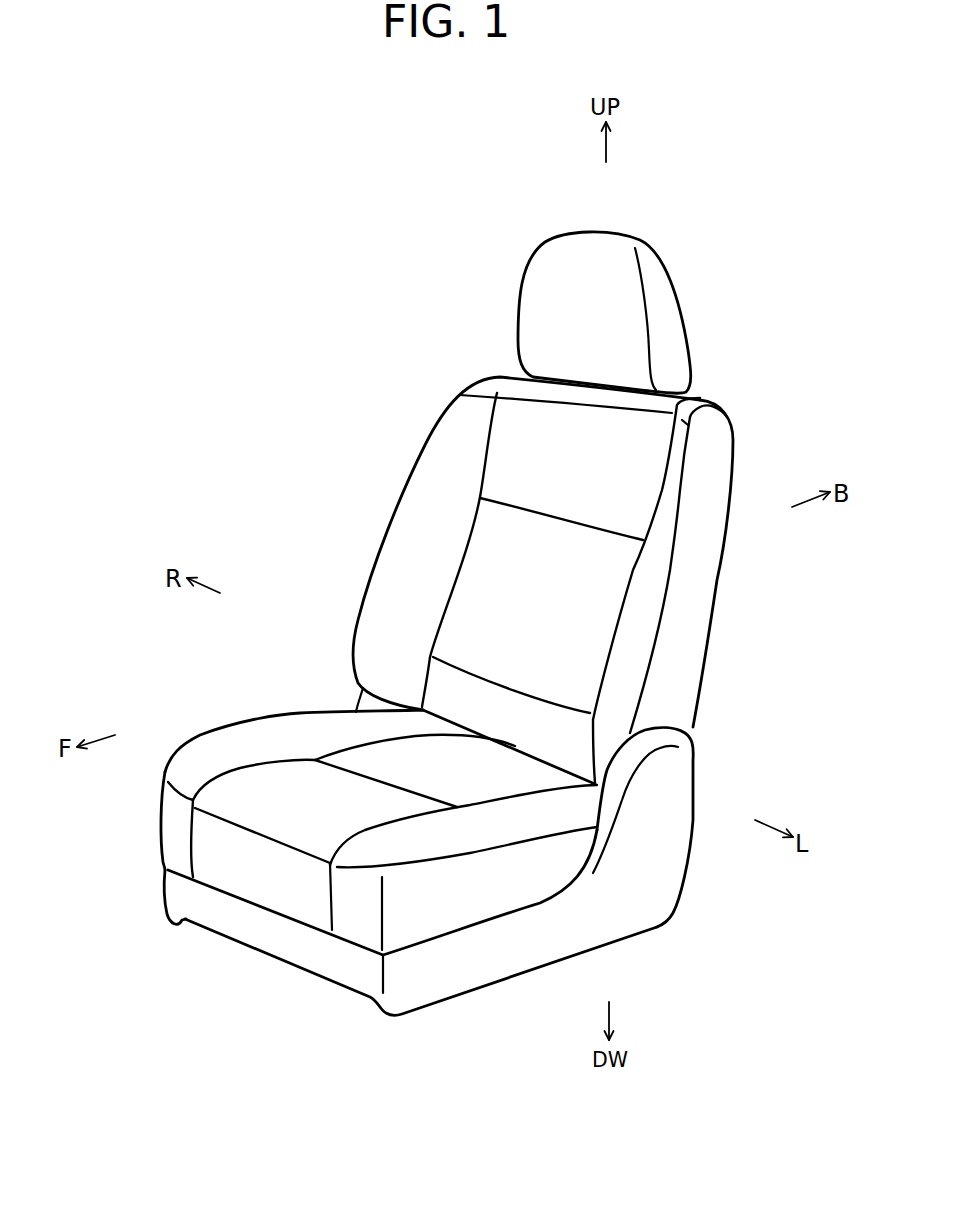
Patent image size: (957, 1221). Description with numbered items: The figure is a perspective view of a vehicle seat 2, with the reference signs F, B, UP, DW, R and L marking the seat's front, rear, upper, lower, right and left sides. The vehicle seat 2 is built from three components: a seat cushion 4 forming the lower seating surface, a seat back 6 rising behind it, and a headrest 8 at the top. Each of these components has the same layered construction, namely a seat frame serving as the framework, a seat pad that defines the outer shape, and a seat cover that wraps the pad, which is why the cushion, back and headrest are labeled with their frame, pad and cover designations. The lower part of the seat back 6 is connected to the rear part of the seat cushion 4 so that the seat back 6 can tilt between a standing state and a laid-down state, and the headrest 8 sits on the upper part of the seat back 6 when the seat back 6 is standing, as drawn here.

The vehicle seat 2 is at (712, 183).
The seat cushion 4 is at (272, 733).
The seat back 6 is at (420, 470).
The headrest 8 is at (530, 300).